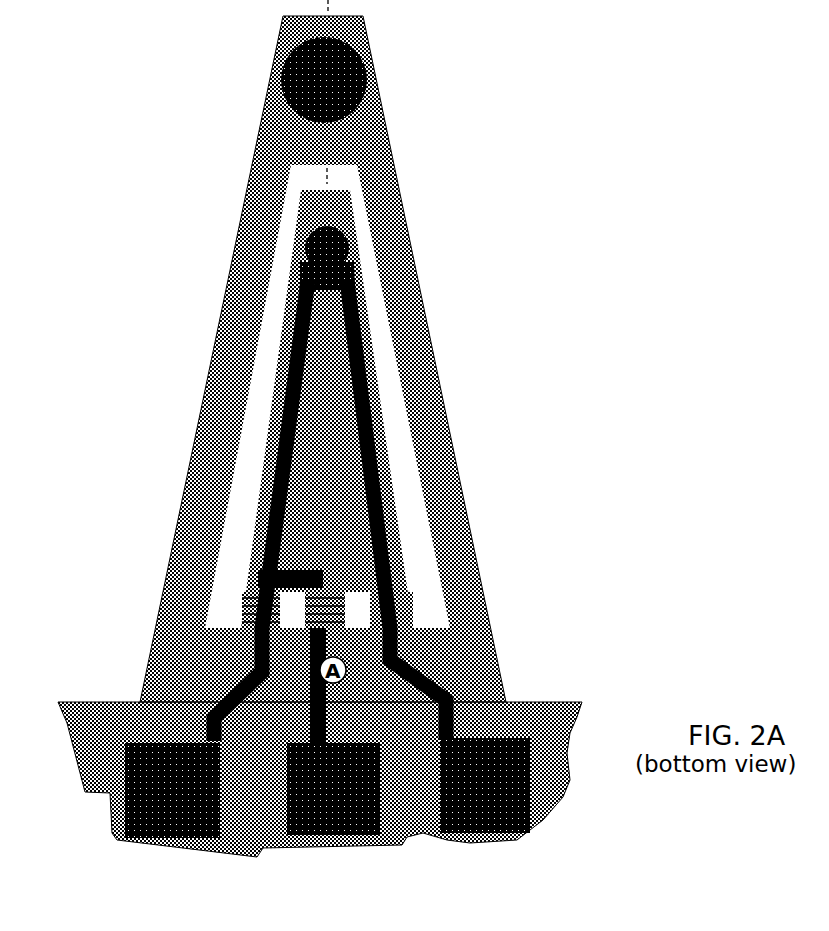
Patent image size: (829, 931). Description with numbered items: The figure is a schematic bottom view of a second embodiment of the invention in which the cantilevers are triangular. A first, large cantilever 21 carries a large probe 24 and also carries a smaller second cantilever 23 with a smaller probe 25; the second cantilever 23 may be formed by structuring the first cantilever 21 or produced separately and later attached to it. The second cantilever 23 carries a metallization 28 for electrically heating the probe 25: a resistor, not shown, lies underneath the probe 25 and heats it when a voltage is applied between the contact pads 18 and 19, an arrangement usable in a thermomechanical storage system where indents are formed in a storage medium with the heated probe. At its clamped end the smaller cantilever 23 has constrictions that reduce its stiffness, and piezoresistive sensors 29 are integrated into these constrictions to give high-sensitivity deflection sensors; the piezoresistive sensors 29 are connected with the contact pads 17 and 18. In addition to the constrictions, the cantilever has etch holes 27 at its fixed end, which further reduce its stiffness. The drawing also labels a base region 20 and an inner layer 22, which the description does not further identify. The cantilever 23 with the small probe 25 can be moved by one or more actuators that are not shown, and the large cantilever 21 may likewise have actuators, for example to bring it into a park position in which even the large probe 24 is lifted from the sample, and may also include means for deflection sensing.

The contact pad 17 is at (140, 842).
The contact pad 18 is at (340, 843).
The contact pad 19 is at (465, 837).
The base portion 20 is at (562, 700).
The first cantilever 21 is at (247, 162).
The inner conductor layer 22 is at (237, 570).
The second cantilever 23 is at (273, 400).
The large probe 24 is at (368, 72).
The smaller probe 25 is at (367, 190).
The etch holes 27 is at (293, 617).
The metallization 28 is at (387, 433).
The piezoresistive sensors 29 is at (240, 608).